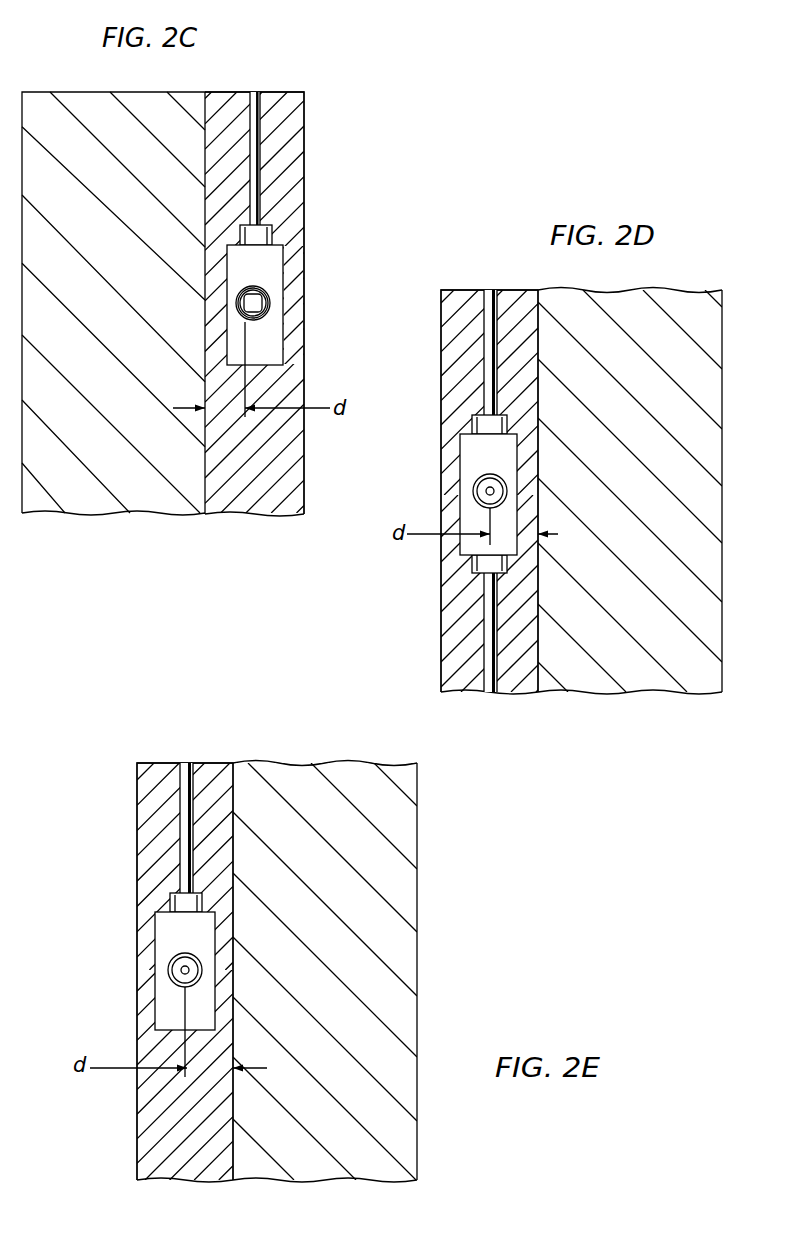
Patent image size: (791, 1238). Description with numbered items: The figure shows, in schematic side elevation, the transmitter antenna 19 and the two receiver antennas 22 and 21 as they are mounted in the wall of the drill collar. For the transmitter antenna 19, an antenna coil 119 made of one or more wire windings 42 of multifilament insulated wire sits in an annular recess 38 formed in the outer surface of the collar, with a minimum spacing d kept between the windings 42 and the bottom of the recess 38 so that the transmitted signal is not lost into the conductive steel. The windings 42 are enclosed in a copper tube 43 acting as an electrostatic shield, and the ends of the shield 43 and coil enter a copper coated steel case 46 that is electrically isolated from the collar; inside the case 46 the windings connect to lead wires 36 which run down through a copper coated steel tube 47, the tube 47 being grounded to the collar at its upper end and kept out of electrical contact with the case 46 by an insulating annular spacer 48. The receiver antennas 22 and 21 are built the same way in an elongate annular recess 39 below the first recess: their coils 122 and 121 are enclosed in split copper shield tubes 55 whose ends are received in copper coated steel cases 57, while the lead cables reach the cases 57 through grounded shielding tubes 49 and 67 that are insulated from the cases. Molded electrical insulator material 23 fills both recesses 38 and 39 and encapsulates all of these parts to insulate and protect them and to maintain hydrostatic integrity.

In FIG. 2C, the transmitter antenna 19 is at (312, 248).
In FIG. 2E, the receiver antenna 21 is at (128, 958).
In FIG. 2D, the receiver antenna 22 is at (428, 421).
In FIG. 2C, the electrical insulator material 23 is at (290, 477).
In FIG. 2D, the electrical insulator material 23 is at (455, 657).
In FIG. 2E, the electrical insulator material 23 is at (143, 797).
In FIG. 2C, the lead wires 36 is at (238, 302).
In FIG. 2C, the annular recess 38 is at (205, 477).
In FIG. 2D, the elongate annular recess 39 is at (538, 668).
In FIG. 2E, the elongate annular recess 39 is at (232, 790).
In FIG. 2C, the wire windings 42 is at (240, 320).
In FIG. 2C, the copper tube 43 is at (272, 300).
In FIG. 2C, the copper coated steel case 46 is at (273, 357).
In FIG. 2C, the copper coated steel tube 47 is at (260, 147).
In FIG. 2C, the electrically insulating annular spacer 48 is at (271, 226).
In FIG. 2D, the copper coated steel shielding tube 49 is at (488, 354).
In FIG. 2D, the copper tube 55 is at (503, 480).
In FIG. 2E, the copper tube 55 is at (197, 957).
In FIG. 2D, the copper coated steel case 57 is at (466, 543).
In FIG. 2E, the copper coated steel case 57 is at (165, 1015).
In FIG. 2D, the shielding tube 67 is at (488, 606).
In FIG. 2E, the shielding tube 67 is at (185, 830).
In FIG. 2C, the antenna coil 119 is at (265, 316).
In FIG. 2E, the receiver antenna coil 121 is at (175, 958).
In FIG. 2D, the receiver antenna coil 122 is at (482, 488).